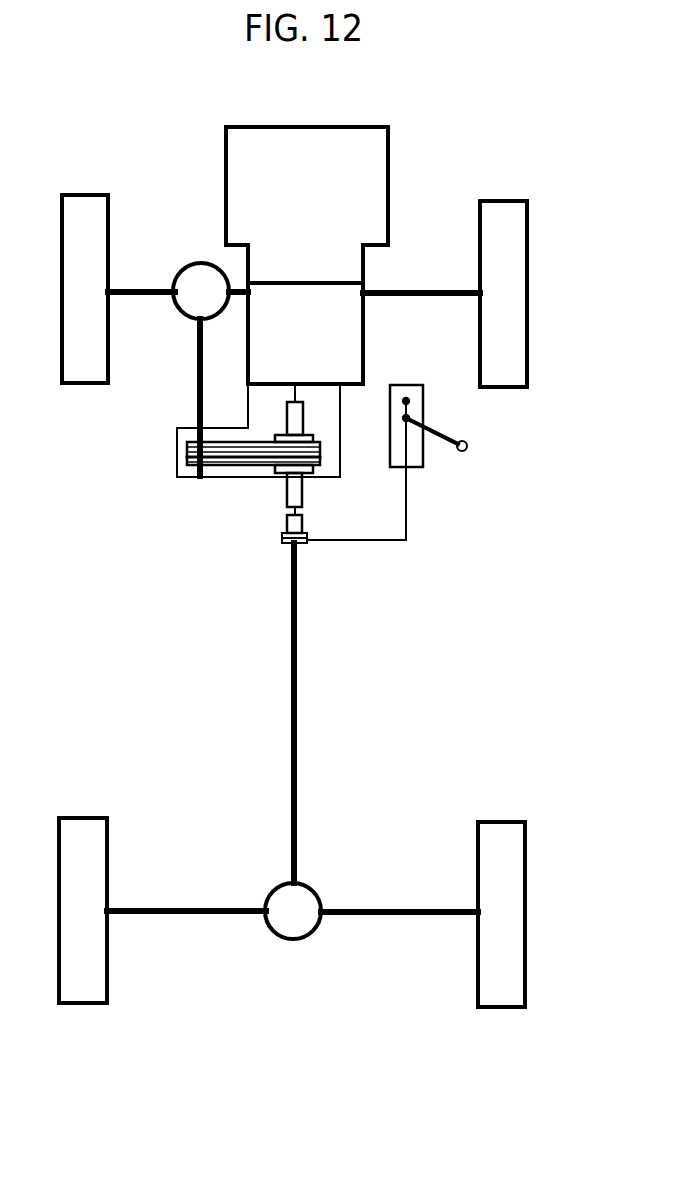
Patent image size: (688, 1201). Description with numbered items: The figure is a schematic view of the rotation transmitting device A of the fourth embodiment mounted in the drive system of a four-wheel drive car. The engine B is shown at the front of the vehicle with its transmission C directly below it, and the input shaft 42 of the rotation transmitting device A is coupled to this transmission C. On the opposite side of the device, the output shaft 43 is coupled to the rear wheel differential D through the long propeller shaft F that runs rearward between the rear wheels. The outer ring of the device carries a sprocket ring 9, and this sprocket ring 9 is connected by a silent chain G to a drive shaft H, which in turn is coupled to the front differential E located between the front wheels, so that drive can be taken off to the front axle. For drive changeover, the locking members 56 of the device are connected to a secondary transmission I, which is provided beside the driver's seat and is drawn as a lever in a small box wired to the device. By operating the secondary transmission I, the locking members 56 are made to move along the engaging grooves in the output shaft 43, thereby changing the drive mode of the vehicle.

The engine B is at (376, 152).
The transmission C is at (343, 336).
The front differential E is at (202, 280).
The drive shaft H is at (198, 371).
The silent chain G is at (232, 457).
The rotation transmitting device A is at (276, 478).
The input shaft 42 is at (297, 414).
The sprocket ring 9 is at (313, 440).
The output shaft 43 is at (297, 495).
The locking members 56 is at (286, 522).
The secondary transmission I is at (432, 423).
The propeller shaft F is at (297, 735).
The rear wheel differential D is at (293, 905).